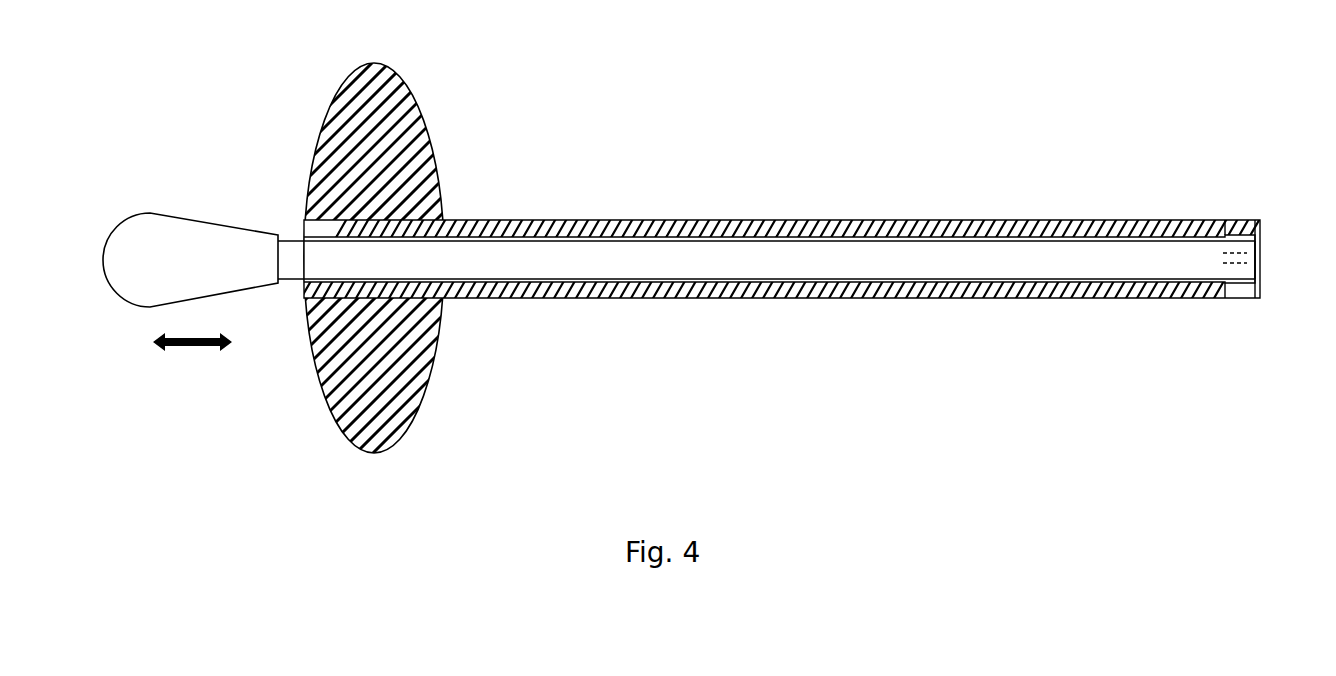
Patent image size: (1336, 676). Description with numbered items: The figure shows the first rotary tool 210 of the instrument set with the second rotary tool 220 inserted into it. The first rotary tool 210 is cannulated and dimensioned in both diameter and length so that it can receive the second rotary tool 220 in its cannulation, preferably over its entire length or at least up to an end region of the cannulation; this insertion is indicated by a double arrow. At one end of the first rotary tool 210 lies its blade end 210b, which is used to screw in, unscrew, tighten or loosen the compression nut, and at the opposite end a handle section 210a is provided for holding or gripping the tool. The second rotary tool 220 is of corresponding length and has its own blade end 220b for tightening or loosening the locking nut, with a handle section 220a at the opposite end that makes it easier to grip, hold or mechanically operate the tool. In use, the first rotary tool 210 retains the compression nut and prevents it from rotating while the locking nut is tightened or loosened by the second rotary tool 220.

The first rotary tool 210 is at (702, 218).
The handle section 210a is at (422, 383).
The blade end 210b is at (1262, 227).
The second rotary tool 220 is at (855, 263).
The handle section 220a is at (152, 250).
The blade end 220b is at (1243, 260).